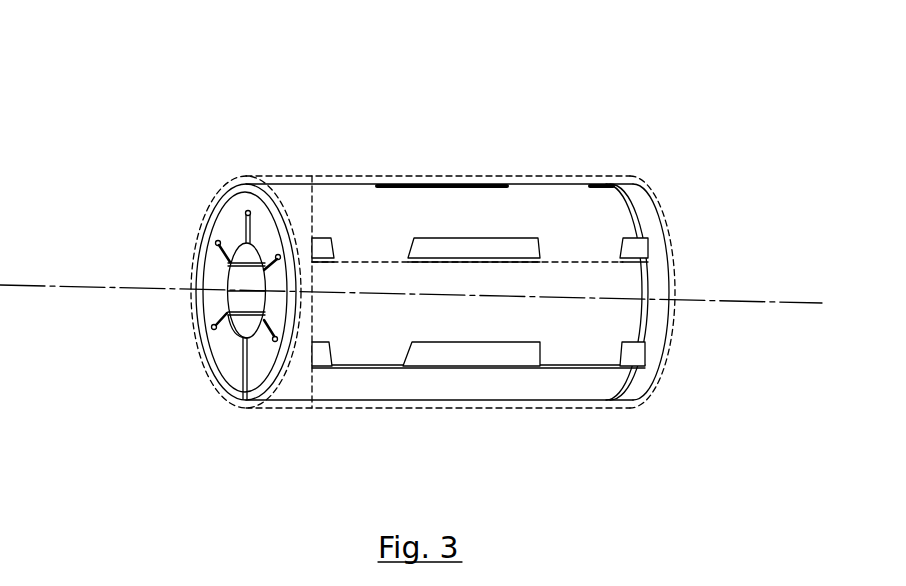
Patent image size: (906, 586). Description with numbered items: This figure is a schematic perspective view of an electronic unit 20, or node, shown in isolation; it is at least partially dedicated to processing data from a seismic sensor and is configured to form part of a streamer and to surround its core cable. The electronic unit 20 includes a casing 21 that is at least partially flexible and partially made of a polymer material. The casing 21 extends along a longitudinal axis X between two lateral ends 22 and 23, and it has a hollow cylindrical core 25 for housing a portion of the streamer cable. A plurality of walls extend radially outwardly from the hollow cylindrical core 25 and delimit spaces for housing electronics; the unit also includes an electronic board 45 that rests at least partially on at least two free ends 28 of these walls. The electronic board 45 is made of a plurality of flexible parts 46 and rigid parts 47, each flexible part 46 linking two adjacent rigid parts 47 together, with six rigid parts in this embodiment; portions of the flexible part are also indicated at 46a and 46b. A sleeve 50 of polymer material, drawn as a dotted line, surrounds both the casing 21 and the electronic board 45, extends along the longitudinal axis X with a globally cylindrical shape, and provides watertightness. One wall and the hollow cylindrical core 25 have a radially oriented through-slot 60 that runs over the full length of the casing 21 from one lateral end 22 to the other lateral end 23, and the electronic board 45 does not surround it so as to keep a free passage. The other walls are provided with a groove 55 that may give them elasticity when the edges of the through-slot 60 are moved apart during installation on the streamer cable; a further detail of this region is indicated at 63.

The electronic unit 20 is at (524, 149).
The casing 21 is at (227, 205).
The lateral end 22 is at (257, 387).
The lateral end 23 is at (648, 393).
The hollow cylindrical core 25 is at (242, 302).
The free ends of the walls 28 is at (315, 238).
The electronic board 45 is at (592, 227).
The flexible part 46 is at (385, 245).
The first surface portion 46a is at (353, 247).
The second surface portion 46b is at (562, 257).
The rigid part 47 is at (465, 210).
The sleeve 50 is at (318, 176).
The groove 55 is at (213, 323).
The through-slot 60 is at (242, 377).
The capsule lower end 63 is at (266, 362).
The longitudinal axis X is at (796, 303).